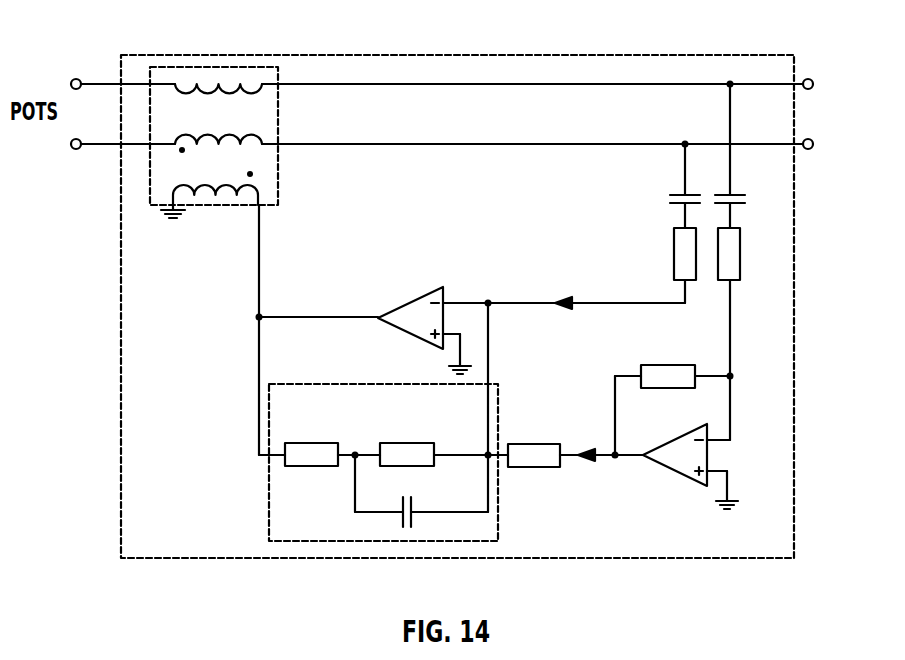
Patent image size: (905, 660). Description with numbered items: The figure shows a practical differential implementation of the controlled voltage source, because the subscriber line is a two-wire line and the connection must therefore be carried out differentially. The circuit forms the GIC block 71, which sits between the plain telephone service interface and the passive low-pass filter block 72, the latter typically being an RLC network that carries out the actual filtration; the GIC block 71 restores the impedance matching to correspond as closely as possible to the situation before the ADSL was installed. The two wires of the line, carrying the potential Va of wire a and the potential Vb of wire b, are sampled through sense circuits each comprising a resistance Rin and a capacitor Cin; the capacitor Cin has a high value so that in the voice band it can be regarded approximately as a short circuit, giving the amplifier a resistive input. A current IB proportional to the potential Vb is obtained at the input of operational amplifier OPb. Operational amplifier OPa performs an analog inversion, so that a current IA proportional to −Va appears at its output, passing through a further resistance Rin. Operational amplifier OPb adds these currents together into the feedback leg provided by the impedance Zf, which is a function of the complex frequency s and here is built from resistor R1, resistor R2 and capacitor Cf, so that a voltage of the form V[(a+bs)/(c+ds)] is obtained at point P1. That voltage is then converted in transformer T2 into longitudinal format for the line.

The GIC block 71 is at (362, 55).
The passive low-pass filter block 72 is at (867, 129).
The transformer T2 is at (220, 205).
The point P1 is at (317, 330).
The operational amplifier OPb is at (395, 300).
The operational amplifier OPa is at (660, 440).
The impedance Zf is at (378, 446).
The resistor R1 is at (307, 441).
The resistor R2 is at (421, 441).
The capacitor Cf is at (421, 491).
The resistance Rin is at (632, 347).
The capacitor Cin is at (708, 156).
The potential Va is at (550, 85).
The potential Vb is at (550, 149).
The current IA is at (615, 442).
The current IB is at (564, 290).